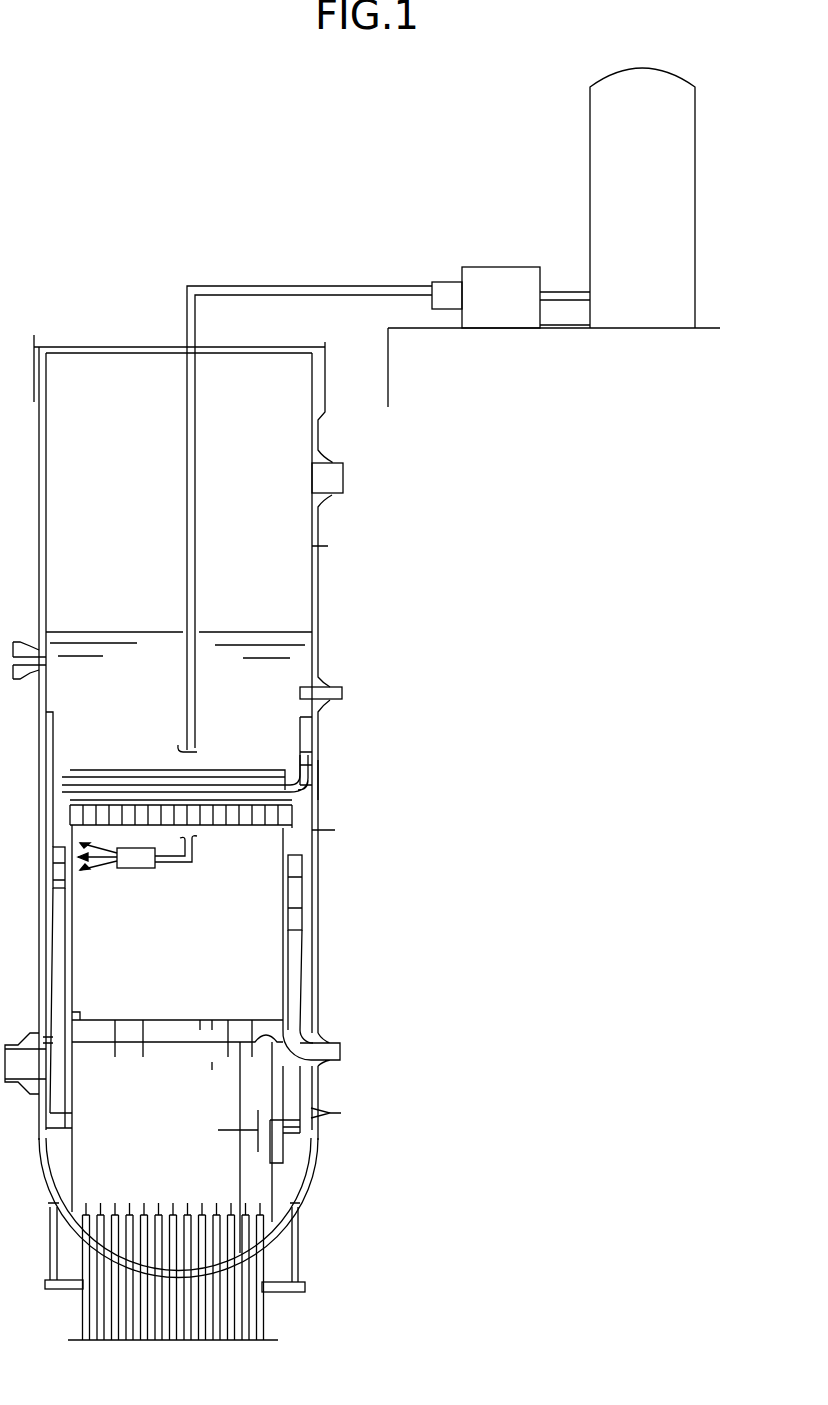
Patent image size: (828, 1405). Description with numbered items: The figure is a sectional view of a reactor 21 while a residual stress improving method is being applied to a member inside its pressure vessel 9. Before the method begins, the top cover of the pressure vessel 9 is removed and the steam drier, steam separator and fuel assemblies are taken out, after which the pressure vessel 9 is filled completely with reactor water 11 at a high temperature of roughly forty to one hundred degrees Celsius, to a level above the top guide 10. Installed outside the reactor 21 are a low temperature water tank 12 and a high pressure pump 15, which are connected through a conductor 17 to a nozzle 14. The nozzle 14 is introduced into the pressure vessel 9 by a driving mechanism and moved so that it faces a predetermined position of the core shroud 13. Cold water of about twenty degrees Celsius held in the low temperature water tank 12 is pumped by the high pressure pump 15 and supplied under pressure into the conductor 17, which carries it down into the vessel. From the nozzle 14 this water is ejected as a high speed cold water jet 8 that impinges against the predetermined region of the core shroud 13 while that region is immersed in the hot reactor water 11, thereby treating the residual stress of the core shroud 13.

The high speed cold water jet 8 is at (105, 866).
The pressure vessel 9 is at (318, 580).
The top guide 10 is at (228, 830).
The reactor water 11 is at (148, 655).
The low temperature water tank 12 is at (672, 183).
The core shroud 13 is at (74, 970).
The nozzle 14 is at (143, 870).
The high pressure pump 15 is at (503, 276).
The conductor 17 is at (197, 526).
The reactor 21 is at (354, 780).